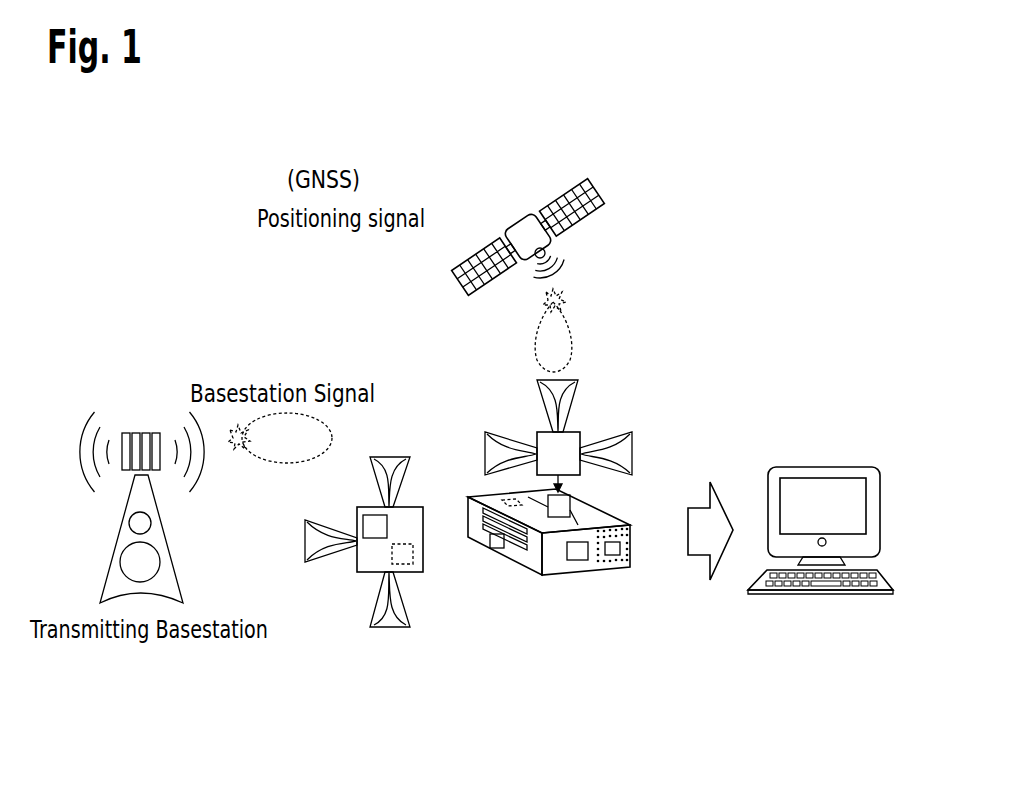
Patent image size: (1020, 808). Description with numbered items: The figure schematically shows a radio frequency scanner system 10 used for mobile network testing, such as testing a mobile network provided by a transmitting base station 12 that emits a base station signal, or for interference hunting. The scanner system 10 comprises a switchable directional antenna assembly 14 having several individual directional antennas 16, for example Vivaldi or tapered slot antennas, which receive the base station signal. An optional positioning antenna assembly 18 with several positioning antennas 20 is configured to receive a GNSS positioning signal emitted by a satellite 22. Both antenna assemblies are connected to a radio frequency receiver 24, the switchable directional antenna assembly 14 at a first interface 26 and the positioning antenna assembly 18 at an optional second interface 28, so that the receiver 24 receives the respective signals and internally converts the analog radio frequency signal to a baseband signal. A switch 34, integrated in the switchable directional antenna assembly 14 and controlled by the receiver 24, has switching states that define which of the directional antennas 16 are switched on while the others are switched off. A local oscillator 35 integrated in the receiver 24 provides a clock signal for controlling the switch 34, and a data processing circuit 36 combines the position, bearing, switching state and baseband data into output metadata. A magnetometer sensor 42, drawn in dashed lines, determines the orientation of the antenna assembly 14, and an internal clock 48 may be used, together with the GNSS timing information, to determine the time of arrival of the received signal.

The radio frequency scanner system 10 is at (750, 242).
The transmitting base station 12 is at (118, 542).
The switchable directional antenna assembly 14 is at (365, 575).
The directional antennas 16 is at (305, 540).
The positioning antenna assembly 18 is at (578, 430).
The positioning antennas 20 is at (500, 433).
The satellite 22 is at (511, 212).
The radio frequency receiver 24 is at (570, 576).
The first interface 26 is at (492, 548).
The second interface 28 is at (572, 506).
The switch 34 is at (372, 515).
The local oscillator 35 is at (582, 561).
The data processing circuit 36 is at (630, 560).
The magnetometer sensor 42 is at (405, 575).
The internal clock 48 is at (502, 503).